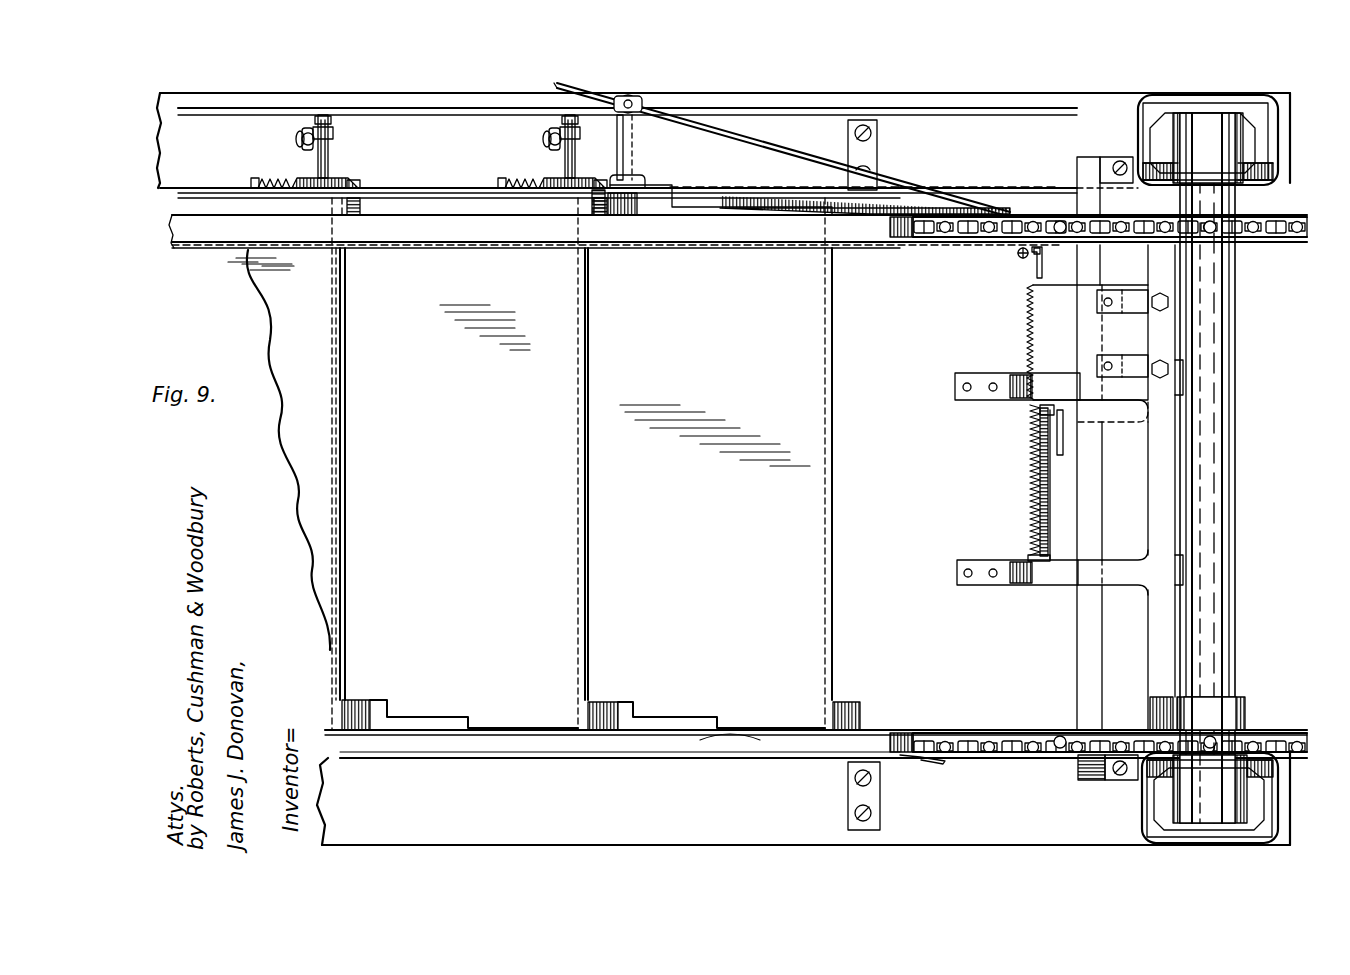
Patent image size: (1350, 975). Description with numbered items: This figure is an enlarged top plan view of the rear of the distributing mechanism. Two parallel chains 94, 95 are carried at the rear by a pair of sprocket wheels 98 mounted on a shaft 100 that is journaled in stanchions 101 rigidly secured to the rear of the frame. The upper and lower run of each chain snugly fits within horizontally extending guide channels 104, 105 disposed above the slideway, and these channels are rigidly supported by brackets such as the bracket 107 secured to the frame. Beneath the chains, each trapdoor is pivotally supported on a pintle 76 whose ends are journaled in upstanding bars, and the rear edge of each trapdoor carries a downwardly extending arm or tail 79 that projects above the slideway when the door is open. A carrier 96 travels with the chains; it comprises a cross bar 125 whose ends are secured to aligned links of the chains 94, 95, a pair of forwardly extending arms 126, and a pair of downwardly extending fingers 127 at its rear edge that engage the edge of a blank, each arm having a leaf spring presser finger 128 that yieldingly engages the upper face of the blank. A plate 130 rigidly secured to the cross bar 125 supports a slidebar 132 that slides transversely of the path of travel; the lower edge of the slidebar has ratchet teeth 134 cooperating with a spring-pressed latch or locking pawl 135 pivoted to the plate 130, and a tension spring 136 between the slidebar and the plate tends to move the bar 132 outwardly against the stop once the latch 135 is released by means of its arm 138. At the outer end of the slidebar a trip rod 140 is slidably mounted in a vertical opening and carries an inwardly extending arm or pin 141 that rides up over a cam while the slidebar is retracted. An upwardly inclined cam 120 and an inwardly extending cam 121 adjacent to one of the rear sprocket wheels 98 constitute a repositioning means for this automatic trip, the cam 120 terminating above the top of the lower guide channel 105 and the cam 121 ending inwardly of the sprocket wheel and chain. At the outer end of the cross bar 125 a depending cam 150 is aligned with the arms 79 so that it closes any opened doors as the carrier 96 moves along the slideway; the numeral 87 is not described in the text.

The pintle 76 is at (340, 524).
The arm or tail 79 is at (365, 712).
The lower frame bar 87 is at (545, 748).
The chain 94 is at (912, 242).
The chain 95 is at (920, 730).
The carrier 96 is at (997, 482).
The sprocket wheel 98 is at (1233, 240).
The shaft 100 is at (1208, 462).
The stanchion 101 is at (1265, 152).
The guide channel 104 is at (504, 232).
The guide channel 105 is at (816, 766).
The bracket 107 is at (870, 790).
The upwardly inclined cam 120 is at (770, 205).
The inwardly extending cam 121 is at (855, 185).
The cross bar 125 is at (1150, 470).
The forwardly extending arm 126 is at (955, 385).
The downwardly extending finger 127 is at (1183, 392).
The leaf spring presser finger 128 is at (1020, 385).
The plate 130 is at (1100, 342).
The slidebar 132 is at (1033, 283).
The ratchet teeth 134 is at (1042, 523).
The latch or locking pawl 135 is at (1030, 425).
The tension spring 136 is at (1028, 505).
The arm 138 is at (1055, 445).
The trip rod 140 is at (1015, 258).
The arm or pin 141 is at (1032, 268).
The depending cam 150 is at (1155, 710).